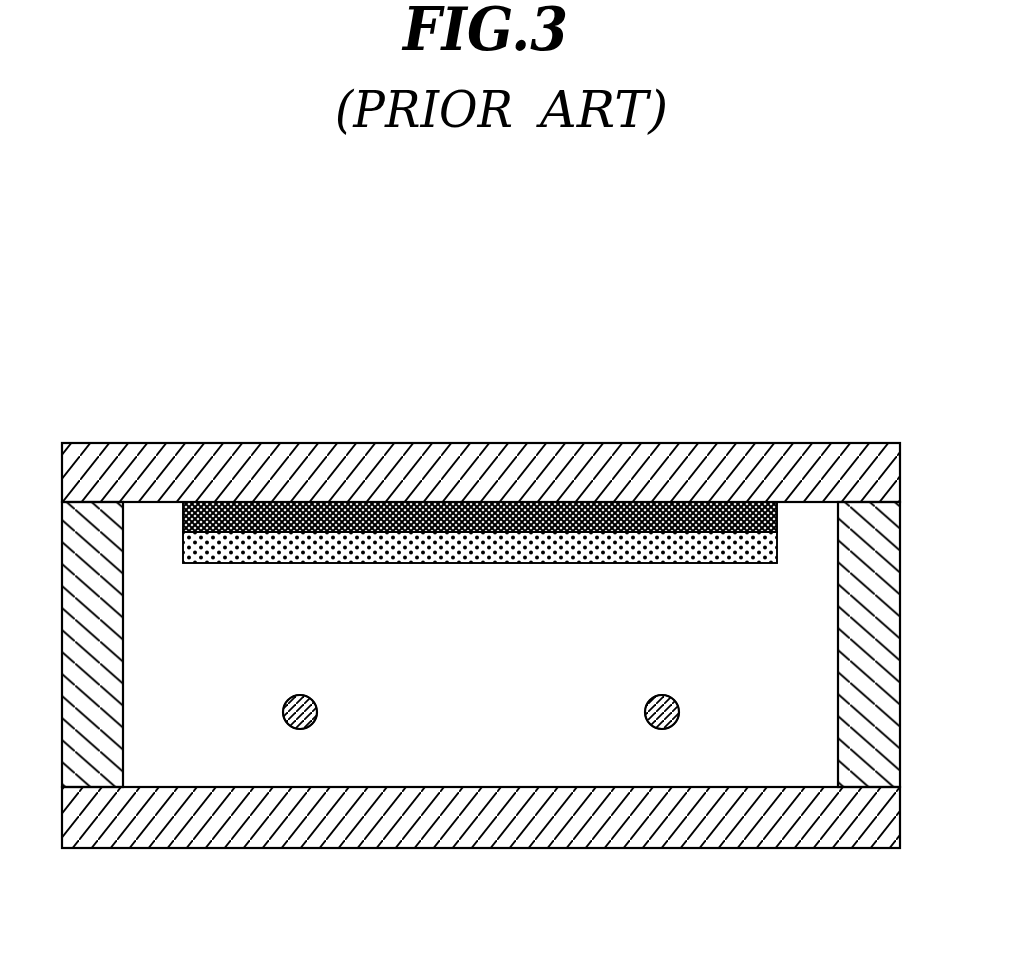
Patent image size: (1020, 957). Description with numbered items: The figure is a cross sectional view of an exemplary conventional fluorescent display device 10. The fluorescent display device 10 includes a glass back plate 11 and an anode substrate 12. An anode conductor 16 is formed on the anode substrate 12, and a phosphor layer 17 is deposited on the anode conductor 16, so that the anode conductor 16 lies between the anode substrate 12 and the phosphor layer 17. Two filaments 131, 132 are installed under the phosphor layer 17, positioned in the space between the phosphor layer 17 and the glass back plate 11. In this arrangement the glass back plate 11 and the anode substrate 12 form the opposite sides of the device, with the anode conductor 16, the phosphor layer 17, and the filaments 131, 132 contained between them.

The fluorescent display device 10 is at (737, 283).
The glass back plate 11 is at (527, 837).
The anode substrate 12 is at (247, 455).
The anode conductor 16 is at (462, 498).
The phosphor layer 17 is at (605, 545).
The filament 131 is at (295, 730).
The filament 132 is at (668, 728).